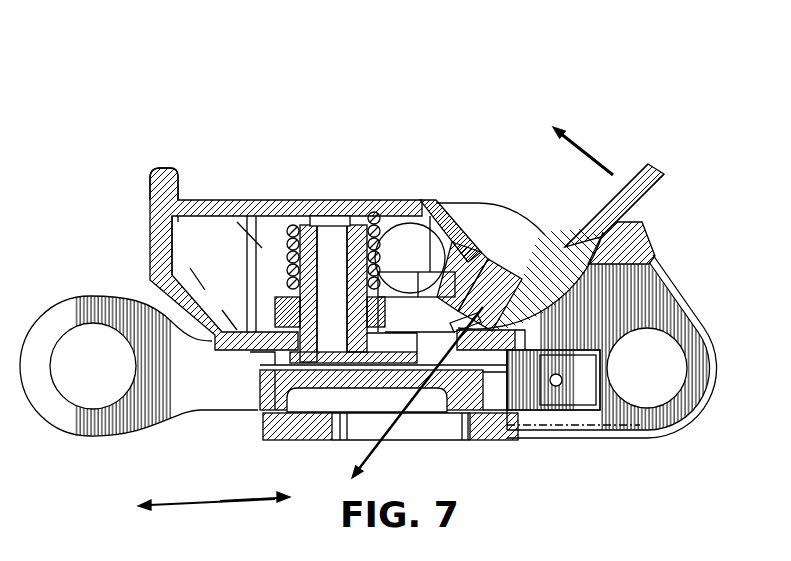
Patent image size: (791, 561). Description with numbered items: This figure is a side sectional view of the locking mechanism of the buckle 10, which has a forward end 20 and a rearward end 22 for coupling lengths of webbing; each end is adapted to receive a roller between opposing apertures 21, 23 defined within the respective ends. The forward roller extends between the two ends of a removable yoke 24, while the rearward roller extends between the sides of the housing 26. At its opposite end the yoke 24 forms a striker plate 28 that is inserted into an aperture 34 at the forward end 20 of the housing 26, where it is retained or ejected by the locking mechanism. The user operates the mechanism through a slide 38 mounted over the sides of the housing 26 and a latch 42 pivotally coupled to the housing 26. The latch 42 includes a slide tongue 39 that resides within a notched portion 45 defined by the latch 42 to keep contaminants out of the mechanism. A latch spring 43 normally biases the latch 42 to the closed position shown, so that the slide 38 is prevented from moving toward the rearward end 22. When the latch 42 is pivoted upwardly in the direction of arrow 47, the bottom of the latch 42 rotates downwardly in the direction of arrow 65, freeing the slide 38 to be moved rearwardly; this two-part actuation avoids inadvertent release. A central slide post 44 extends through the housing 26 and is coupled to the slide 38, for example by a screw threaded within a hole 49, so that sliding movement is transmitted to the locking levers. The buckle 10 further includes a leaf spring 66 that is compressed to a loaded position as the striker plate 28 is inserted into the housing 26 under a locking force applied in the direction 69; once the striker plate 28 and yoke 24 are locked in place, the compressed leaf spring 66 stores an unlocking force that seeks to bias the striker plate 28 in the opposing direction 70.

The buckle 10 is at (499, 102).
The forward end 20 is at (150, 211).
The aperture 21 is at (672, 395).
The rearward end 22 is at (687, 313).
The aperture 23 is at (82, 332).
The removable yoke 24 is at (107, 428).
The housing 26 is at (667, 266).
The striker plate 28 is at (465, 402).
The aperture 34 is at (263, 414).
The slide 38 is at (180, 172).
The slide tongue 39 is at (437, 215).
The latch 42 is at (650, 172).
The latch spring 43 is at (503, 365).
The slide post 44 is at (318, 252).
The notched portion 45 is at (490, 270).
The arrow 47 is at (600, 161).
The hole 49 is at (355, 272).
The arrow 65 is at (413, 452).
The leaf spring 66 is at (585, 397).
The locking force direction 69 is at (256, 500).
The opposing direction 70 is at (178, 501).